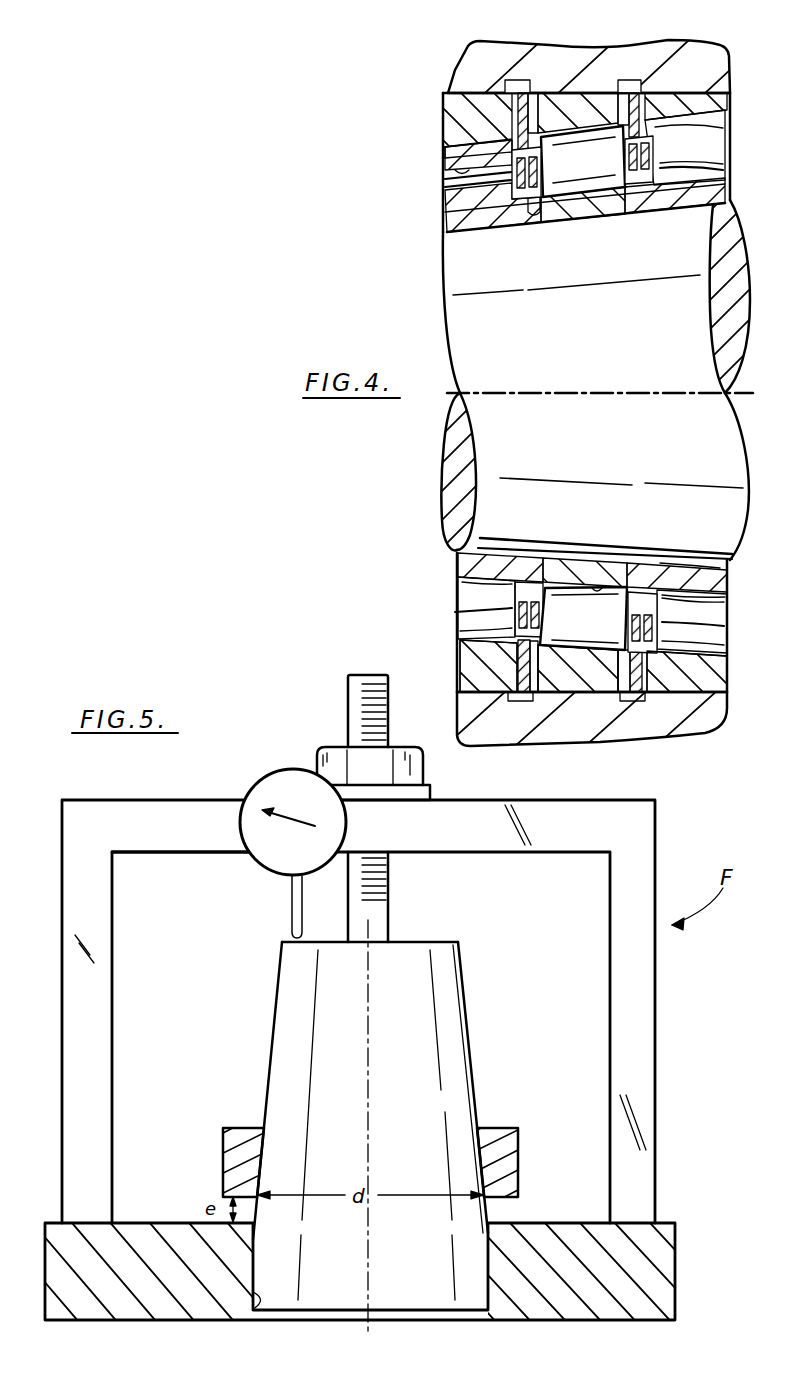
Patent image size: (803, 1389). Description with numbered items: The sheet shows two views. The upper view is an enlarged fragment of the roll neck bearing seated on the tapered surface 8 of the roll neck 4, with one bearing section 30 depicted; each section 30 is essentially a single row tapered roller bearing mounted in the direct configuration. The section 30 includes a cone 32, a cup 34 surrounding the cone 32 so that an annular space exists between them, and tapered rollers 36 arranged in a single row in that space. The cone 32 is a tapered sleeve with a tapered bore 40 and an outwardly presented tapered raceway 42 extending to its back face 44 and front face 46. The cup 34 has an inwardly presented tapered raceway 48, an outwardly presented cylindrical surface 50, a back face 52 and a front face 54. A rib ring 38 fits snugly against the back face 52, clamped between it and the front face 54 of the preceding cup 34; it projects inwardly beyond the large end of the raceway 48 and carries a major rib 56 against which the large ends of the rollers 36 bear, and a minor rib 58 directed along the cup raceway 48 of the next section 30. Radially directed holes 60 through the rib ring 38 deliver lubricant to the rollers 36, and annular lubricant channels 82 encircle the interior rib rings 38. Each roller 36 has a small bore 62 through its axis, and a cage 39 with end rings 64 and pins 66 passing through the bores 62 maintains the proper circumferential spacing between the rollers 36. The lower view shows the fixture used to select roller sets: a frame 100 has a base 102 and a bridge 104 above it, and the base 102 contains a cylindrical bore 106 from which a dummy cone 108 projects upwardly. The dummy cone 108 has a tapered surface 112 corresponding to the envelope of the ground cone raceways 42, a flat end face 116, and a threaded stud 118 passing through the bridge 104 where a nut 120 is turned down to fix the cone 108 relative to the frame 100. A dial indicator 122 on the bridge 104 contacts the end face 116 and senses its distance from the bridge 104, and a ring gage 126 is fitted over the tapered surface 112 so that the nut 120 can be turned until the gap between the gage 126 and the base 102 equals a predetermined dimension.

In FIG. 4, the roll neck 4 is at (450, 447).
In FIG. 4, the tapered surface 8 is at (713, 577).
In FIG. 4, the bearing section 30 is at (589, 82).
In FIG. 4, the cone 32 is at (462, 220).
In FIG. 4, the cup 34 is at (660, 96).
In FIG. 4, the tapered rollers 36 is at (448, 200).
In FIG. 4, the rib ring 38 is at (443, 118).
In FIG. 4, the cage 39 is at (534, 200).
In FIG. 4, the tapered bore 40 is at (570, 580).
In FIG. 4, the raceway 42 is at (598, 588).
In FIG. 4, the back face 44 is at (663, 553).
In FIG. 4, the front face 46 is at (527, 575).
In FIG. 4, the raceway 48 is at (600, 650).
In FIG. 4, the cylindrical surface 50 is at (560, 660).
In FIG. 4, the back face 52 is at (520, 700).
In FIG. 4, the front face 54 is at (673, 692).
In FIG. 4, the major rib 56 is at (443, 132).
In FIG. 4, the minor rib 58 is at (670, 133).
In FIG. 4, the holes 60 is at (521, 80).
In FIG. 4, the small bore 62 is at (445, 158).
In FIG. 4, the end rings 64 is at (522, 190).
In FIG. 4, the pins 66 is at (452, 176).
In FIG. 4, the annular lubricant channels 82 is at (507, 82).
In FIG. 5, the frame 100 is at (660, 1008).
In FIG. 5, the base 102 is at (676, 1262).
In FIG. 5, the bridge 104 is at (168, 858).
In FIG. 5, the cylindrical bore 106 is at (260, 1310).
In FIG. 5, the dummy cone 108 is at (460, 1072).
In FIG. 5, the tapered surface 112 is at (468, 1008).
In FIG. 5, the end face 116 is at (431, 942).
In FIG. 5, the threaded stud 118 is at (362, 676).
In FIG. 5, the nut 120 is at (352, 755).
In FIG. 5, the dial indicator 122 is at (254, 790).
In FIG. 5, the ring gage 126 is at (520, 1165).